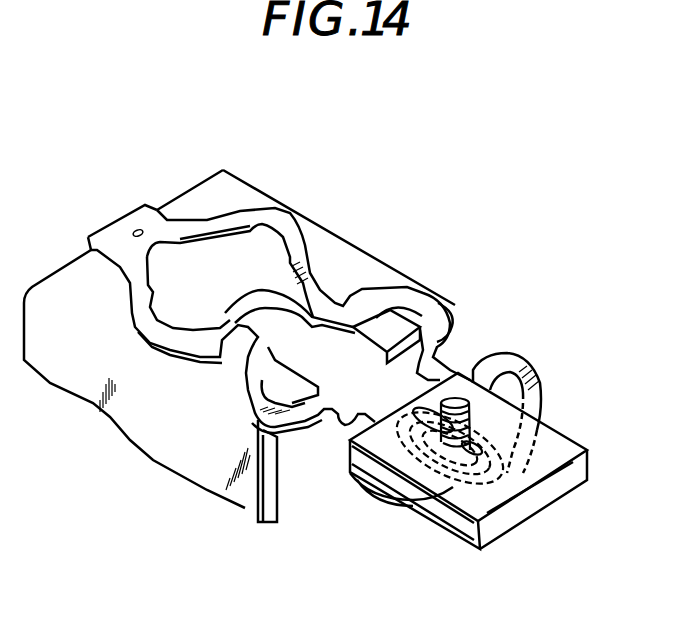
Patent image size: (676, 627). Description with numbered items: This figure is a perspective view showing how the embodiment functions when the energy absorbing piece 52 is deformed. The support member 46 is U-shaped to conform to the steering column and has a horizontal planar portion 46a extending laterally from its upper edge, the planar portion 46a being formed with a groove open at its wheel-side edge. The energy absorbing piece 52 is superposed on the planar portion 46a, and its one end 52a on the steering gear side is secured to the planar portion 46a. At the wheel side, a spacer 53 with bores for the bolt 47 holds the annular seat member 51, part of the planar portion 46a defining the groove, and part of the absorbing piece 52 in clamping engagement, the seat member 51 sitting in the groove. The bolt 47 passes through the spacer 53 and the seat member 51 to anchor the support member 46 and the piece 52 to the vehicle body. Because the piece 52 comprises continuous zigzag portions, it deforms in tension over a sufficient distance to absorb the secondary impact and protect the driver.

The support member 46 is at (265, 498).
The horizontal planar portion 46a is at (232, 190).
The energy absorbing piece 52 is at (300, 245).
The one end of the absorbing piece 52a is at (140, 222).
The bolt 47 is at (437, 428).
The annular seat member 51 is at (475, 427).
The spacer 53 is at (567, 450).